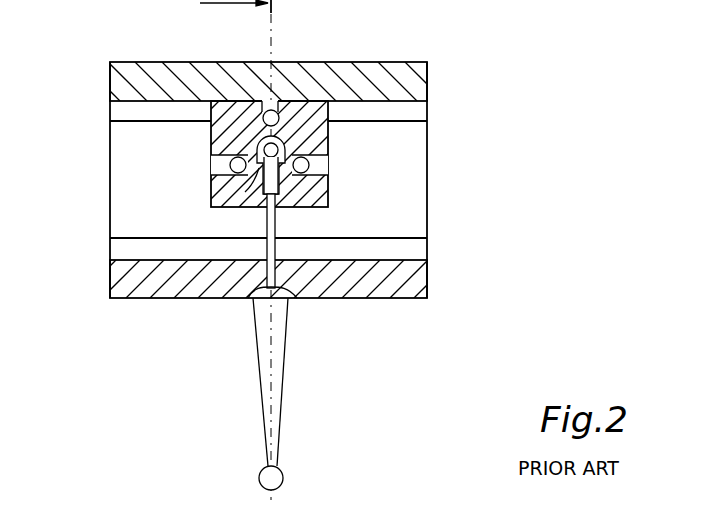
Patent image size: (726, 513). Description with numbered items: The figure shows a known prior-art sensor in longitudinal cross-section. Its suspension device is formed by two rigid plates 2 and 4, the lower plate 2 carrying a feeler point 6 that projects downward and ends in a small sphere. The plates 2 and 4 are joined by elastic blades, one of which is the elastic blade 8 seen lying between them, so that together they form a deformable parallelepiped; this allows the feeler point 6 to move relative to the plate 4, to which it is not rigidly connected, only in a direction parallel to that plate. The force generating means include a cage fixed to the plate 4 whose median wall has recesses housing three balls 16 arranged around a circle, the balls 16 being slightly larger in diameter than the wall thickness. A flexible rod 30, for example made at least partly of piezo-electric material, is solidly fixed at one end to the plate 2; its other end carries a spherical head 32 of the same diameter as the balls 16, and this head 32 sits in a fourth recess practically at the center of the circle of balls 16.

The rigid plate 2 is at (408, 282).
The rigid plate 4 is at (412, 78).
The feeler point 6 is at (273, 382).
The elastic blade 8 is at (415, 112).
The balls 16 is at (273, 108).
The flexible rod 30 is at (278, 225).
The spherical head 32 is at (224, 193).